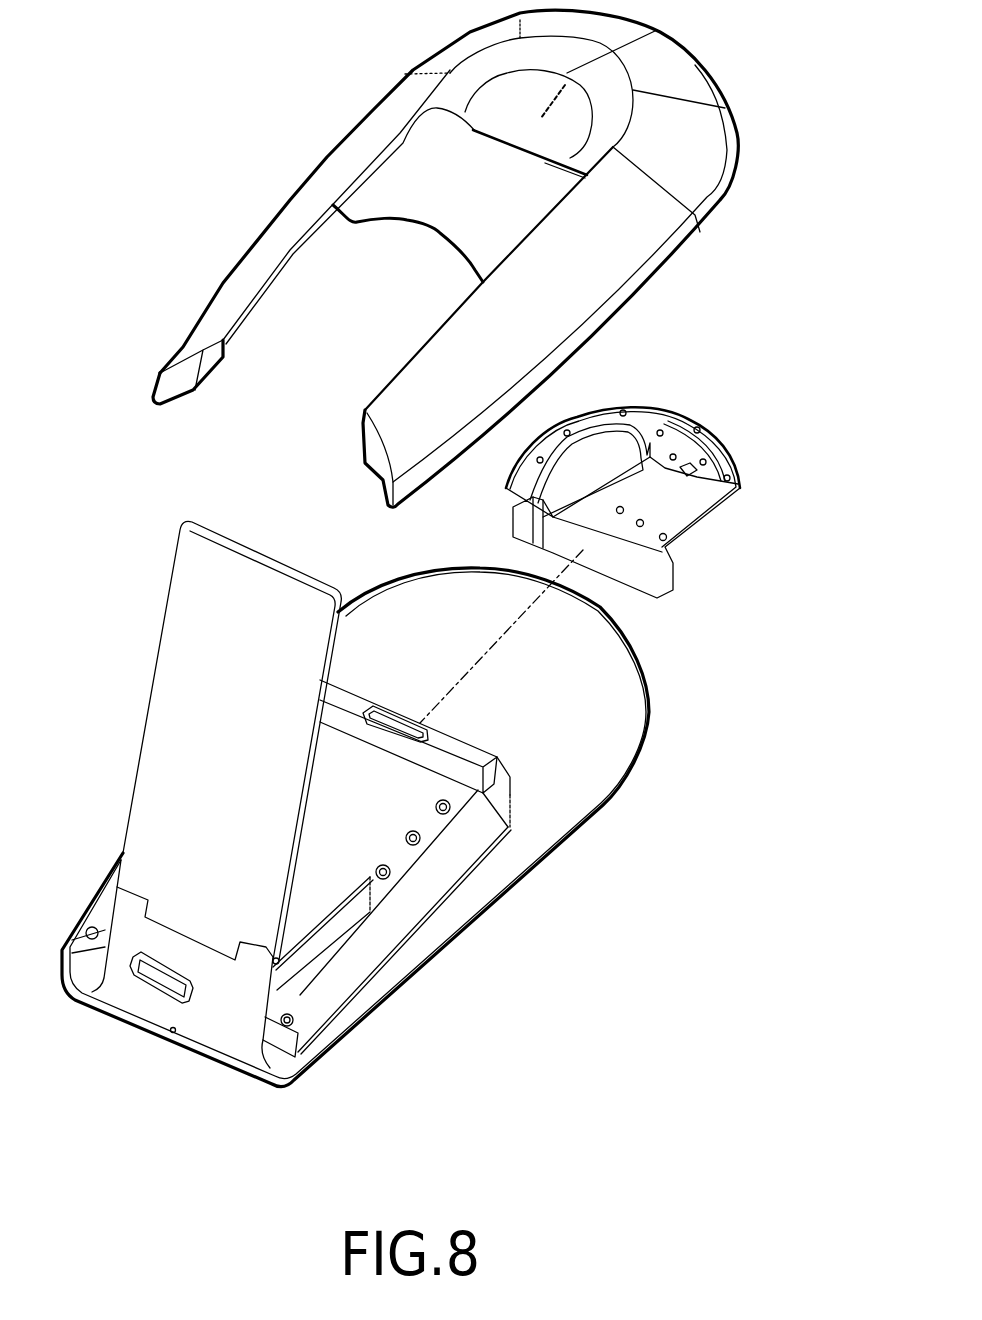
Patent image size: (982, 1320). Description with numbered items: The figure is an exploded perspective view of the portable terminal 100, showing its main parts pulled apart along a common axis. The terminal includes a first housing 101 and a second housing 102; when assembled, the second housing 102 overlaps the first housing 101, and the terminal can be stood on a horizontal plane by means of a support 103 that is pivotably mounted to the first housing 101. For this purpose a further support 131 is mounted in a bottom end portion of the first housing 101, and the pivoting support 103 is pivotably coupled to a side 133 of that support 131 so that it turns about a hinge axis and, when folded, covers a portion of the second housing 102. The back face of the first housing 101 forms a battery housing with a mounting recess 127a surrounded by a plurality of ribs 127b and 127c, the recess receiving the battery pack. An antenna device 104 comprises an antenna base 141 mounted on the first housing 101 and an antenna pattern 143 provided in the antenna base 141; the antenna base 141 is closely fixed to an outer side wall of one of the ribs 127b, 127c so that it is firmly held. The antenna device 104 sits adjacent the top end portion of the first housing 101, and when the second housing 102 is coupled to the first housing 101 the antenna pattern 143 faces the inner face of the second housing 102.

The portable terminal 100 is at (192, 63).
The first housing 101 is at (345, 1062).
The second housing 102 is at (683, 37).
The support 103 is at (141, 674).
The antenna device 104 is at (661, 457).
The mounting recess 127a is at (360, 843).
The rib 127b is at (333, 940).
The rib 127c is at (499, 760).
The support 131 is at (160, 1017).
The side 133 is at (166, 950).
The antenna base 141 is at (693, 507).
The antenna pattern 143 is at (680, 423).